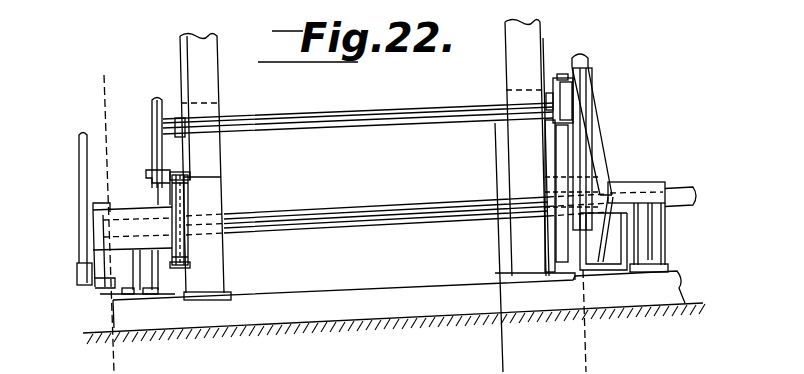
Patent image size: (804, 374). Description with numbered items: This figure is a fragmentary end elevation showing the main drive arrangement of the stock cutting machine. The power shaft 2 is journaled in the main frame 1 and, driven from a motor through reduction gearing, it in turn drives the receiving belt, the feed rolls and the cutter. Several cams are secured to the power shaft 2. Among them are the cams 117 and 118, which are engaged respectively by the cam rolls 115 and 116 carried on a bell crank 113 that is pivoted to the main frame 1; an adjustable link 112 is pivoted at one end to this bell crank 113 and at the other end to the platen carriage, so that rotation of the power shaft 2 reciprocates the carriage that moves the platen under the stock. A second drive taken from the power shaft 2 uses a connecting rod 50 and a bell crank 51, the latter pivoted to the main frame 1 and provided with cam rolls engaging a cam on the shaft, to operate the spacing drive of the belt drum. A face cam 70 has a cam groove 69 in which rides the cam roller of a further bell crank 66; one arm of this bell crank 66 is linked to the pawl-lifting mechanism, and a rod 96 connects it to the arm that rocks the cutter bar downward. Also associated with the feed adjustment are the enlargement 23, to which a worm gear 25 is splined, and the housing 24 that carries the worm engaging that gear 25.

The main frame 1 is at (293, 303).
The power shaft 2 is at (340, 216).
The enlargement 23 is at (128, 94).
The housing 24 is at (496, 132).
The worm gear 25 is at (575, 42).
The connecting rod 50 is at (578, 118).
The bell crank 51 is at (600, 153).
The bell crank 66 is at (160, 194).
The cam groove 69 is at (190, 249).
The face cam 70 is at (197, 190).
The rod 96 is at (157, 145).
The adjustable link 112 is at (335, 370).
The bell crank 113 is at (600, 130).
The cam roll 115 is at (520, 188).
The cam roll 116 is at (520, 249).
The cam 117 is at (520, 230).
The cam 118 is at (520, 164).